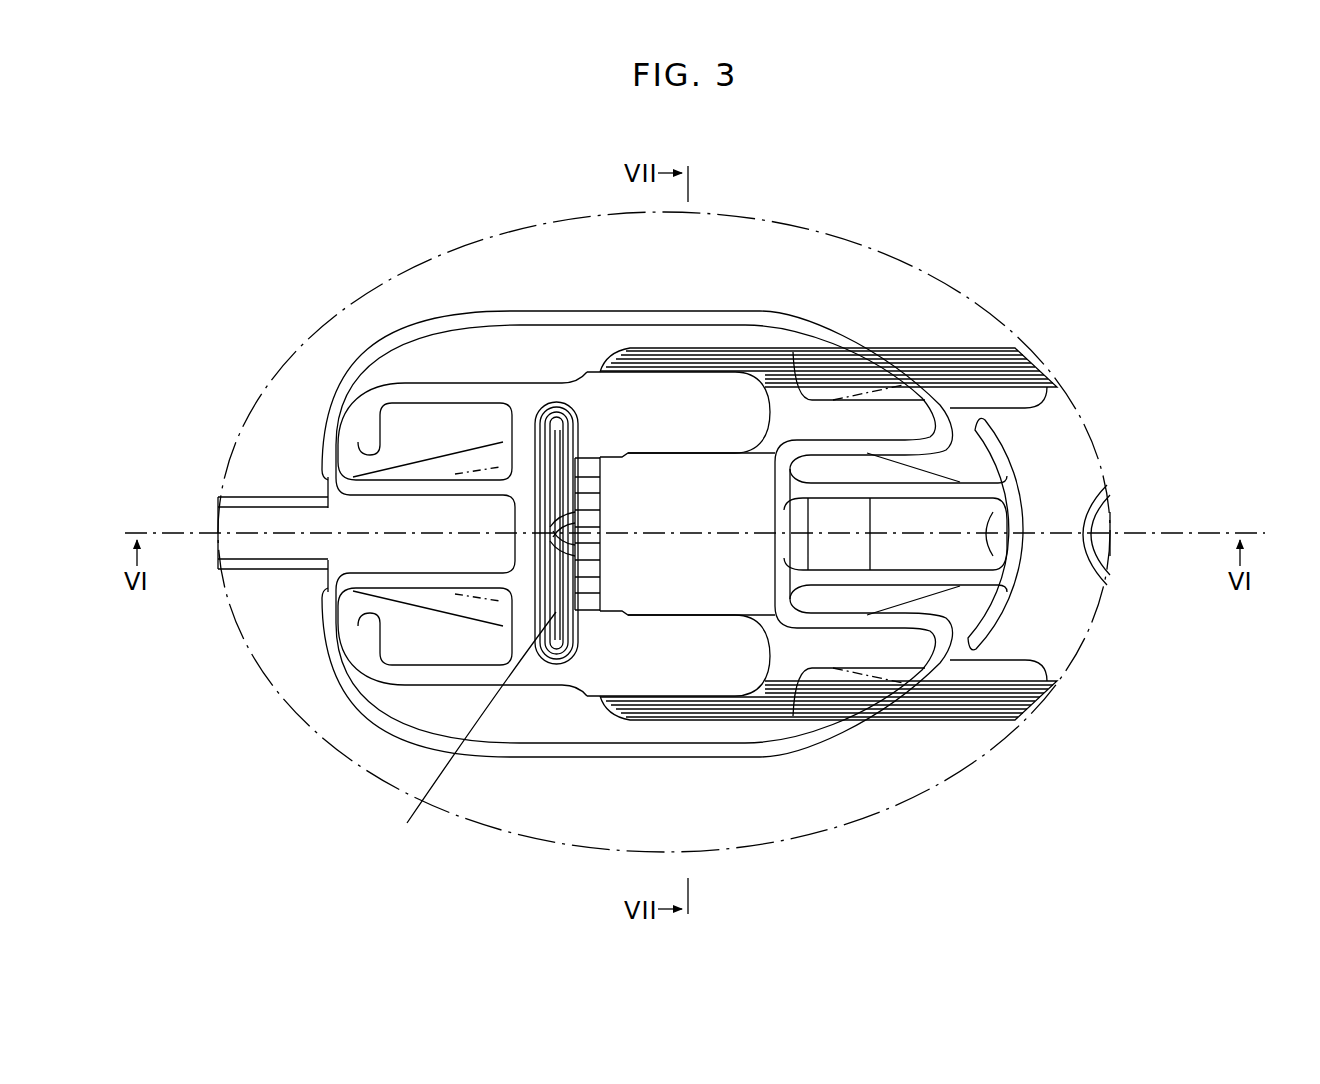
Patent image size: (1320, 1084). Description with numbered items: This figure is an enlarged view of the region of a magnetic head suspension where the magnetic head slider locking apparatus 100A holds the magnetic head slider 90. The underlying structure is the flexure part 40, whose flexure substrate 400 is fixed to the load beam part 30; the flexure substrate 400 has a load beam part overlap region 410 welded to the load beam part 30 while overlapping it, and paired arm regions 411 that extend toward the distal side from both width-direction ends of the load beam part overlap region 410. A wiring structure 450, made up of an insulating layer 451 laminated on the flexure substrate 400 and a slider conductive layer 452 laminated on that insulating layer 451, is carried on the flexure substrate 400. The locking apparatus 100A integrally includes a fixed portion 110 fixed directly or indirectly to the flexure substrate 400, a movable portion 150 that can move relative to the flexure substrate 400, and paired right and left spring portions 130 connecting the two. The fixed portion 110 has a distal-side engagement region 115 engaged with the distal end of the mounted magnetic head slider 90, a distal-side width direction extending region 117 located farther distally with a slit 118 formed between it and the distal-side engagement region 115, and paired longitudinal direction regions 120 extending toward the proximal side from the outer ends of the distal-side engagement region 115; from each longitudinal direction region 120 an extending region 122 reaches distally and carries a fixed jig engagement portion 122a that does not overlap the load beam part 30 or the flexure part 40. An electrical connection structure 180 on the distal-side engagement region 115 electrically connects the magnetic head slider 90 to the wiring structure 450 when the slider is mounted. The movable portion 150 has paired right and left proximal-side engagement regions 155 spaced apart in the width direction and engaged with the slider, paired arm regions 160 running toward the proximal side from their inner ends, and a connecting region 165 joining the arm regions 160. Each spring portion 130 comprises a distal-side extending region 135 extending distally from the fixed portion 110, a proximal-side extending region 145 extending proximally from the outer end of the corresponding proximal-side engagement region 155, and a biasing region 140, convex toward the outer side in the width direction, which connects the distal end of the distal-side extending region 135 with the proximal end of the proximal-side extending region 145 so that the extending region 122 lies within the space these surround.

The load beam part 30 is at (275, 579).
The flexure part 40 is at (920, 730).
The magnetic head slider 90 is at (697, 572).
The magnetic head slider locking apparatus 100A is at (390, 315).
The fixed portion 110 is at (467, 728).
The distal-side engagement region 115 is at (601, 507).
The distal-side width direction extending region 117 is at (522, 497).
The slit 118 is at (548, 405).
The longitudinal direction region 120 is at (657, 424).
The extending region 122 is at (440, 388).
The fixed jig engagement portion 122a is at (372, 441).
The spring portion 130 is at (573, 297).
The distal-side extending region 135 is at (405, 495).
The biasing region 140 is at (638, 312).
The proximal-side extending region 145 is at (833, 447).
The movable portion 150 is at (1032, 610).
The proximal-side engagement region 155 is at (775, 480).
The arm region 160 is at (884, 491).
The connecting region 165 is at (1010, 494).
The electrical connection structure 180 is at (604, 558).
The flexure substrate 400 is at (917, 531).
The load beam part overlap region 410 is at (1067, 450).
The arm region 411 is at (960, 440).
The wiring structure 450 is at (879, 890).
The insulating layer 451 is at (893, 713).
The slider conductive layer 452 is at (900, 714).